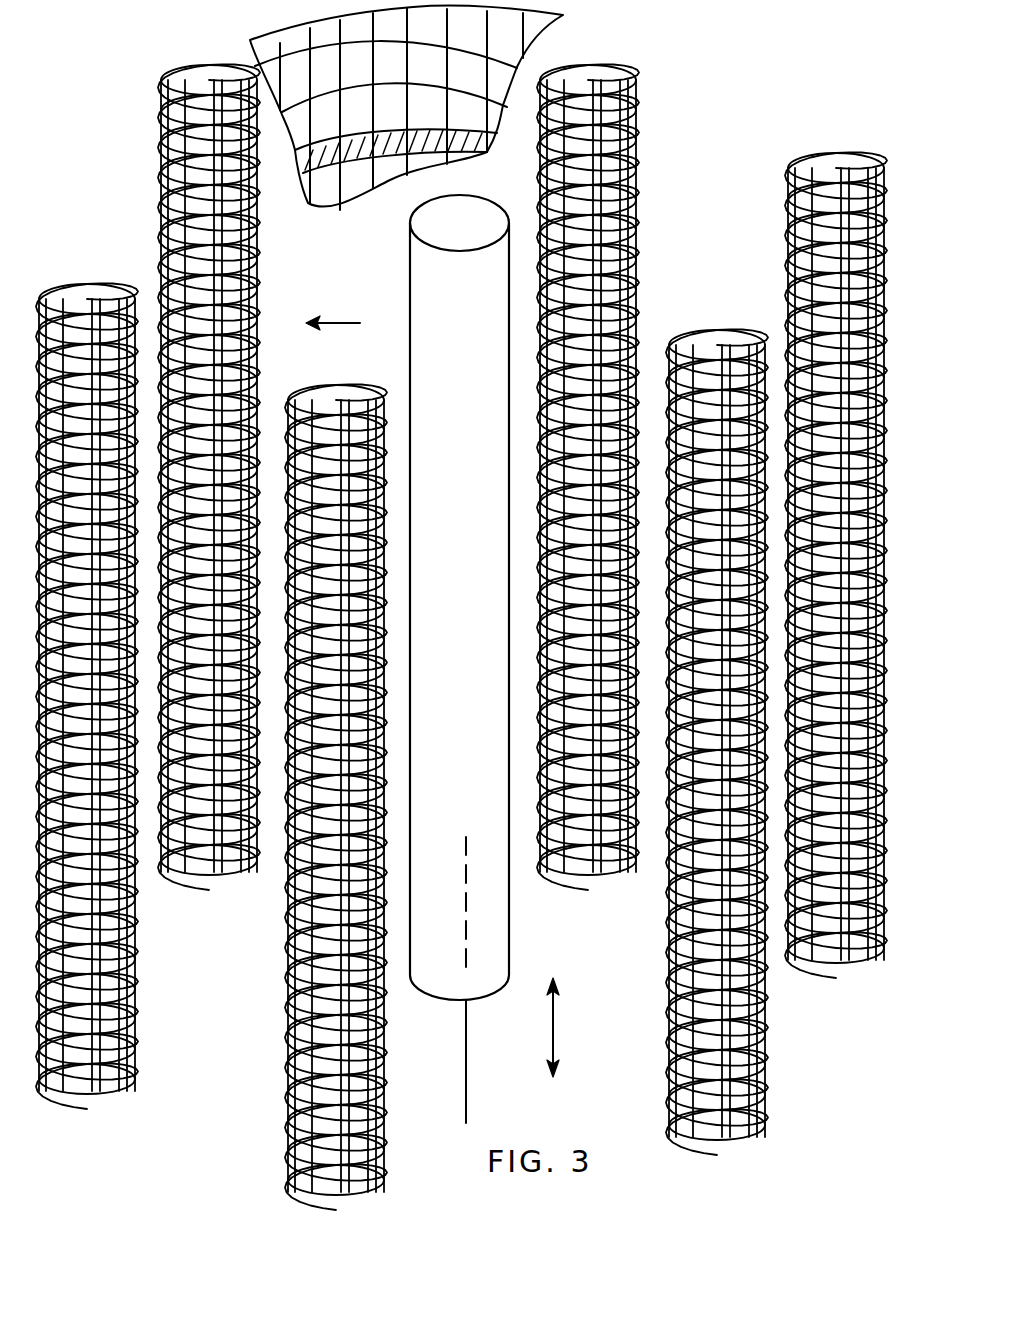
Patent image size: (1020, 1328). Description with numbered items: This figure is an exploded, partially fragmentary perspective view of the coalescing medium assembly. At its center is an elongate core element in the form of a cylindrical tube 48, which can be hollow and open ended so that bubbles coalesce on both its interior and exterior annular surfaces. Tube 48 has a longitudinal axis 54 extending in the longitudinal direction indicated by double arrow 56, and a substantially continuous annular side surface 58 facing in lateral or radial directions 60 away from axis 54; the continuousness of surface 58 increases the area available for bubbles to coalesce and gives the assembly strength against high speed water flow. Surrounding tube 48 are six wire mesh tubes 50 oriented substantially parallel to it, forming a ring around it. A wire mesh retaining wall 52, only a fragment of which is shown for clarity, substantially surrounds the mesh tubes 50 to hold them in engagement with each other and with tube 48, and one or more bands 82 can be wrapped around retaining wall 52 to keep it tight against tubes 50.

The cylindrical tube 48 is at (425, 659).
The wire mesh tubes 50 is at (283, 966).
The wire mesh retaining wall 52 is at (468, 137).
The longitudinal axis 54 is at (466, 975).
The double arrow 56 is at (556, 1030).
The annular side surface 58 is at (410, 290).
The lateral or radial directions 60 is at (338, 326).
The band 82 is at (307, 200).